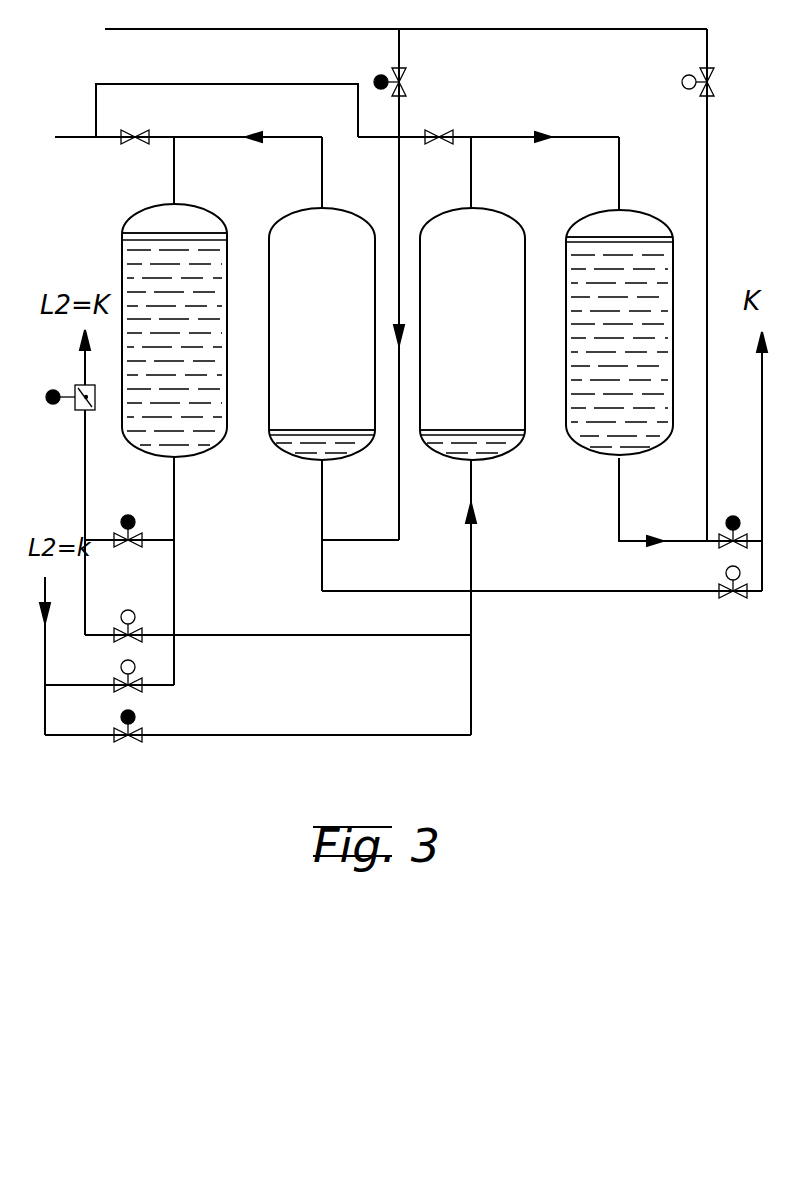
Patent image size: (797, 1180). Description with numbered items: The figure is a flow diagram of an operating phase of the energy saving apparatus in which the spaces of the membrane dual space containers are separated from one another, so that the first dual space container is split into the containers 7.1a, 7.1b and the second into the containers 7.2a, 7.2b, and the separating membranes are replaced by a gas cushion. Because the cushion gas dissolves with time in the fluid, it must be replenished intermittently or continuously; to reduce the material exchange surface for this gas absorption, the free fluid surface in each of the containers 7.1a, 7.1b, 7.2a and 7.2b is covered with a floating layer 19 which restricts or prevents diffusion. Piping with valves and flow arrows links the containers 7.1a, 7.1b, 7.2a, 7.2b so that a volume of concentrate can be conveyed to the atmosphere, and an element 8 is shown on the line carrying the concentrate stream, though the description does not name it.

The container 7.1a is at (197, 283).
The container 7.1b is at (322, 298).
The container 7.2a is at (472, 298).
The container 7.2b is at (605, 296).
The floating layer 19 is at (150, 223).
The flow control / measuring instrument 8 is at (77, 411).